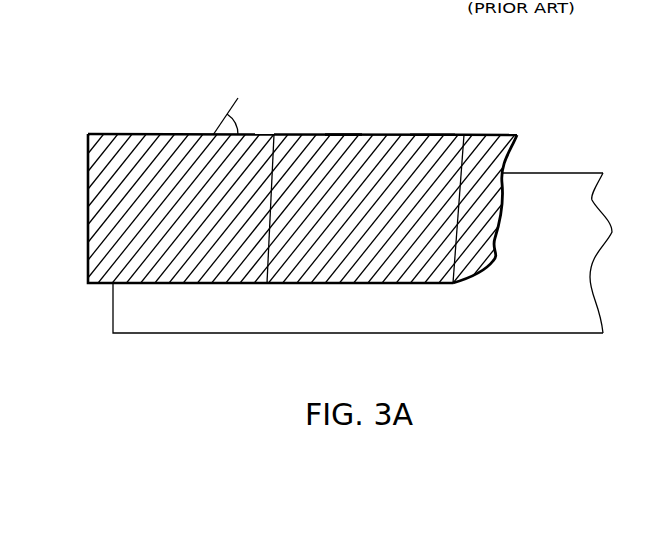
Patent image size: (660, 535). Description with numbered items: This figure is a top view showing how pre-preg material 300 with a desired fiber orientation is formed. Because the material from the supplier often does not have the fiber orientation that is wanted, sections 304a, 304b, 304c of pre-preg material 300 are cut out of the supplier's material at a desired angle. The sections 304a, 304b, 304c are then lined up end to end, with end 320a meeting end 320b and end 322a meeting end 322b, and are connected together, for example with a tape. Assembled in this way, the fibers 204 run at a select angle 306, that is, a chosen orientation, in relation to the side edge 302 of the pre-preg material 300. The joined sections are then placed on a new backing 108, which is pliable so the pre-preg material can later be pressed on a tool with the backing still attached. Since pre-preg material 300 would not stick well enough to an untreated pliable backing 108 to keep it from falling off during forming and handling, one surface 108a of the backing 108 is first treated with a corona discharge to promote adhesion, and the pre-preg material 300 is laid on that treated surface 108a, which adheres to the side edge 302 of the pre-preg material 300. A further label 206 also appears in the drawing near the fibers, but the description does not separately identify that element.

The pre-preg material 300 is at (236, 55).
The side edge 302 is at (497, 132).
The section 304a is at (173, 133).
The section 304b is at (387, 133).
The section 304c is at (478, 132).
The select angle 306 is at (263, 108).
The coating layer 206 is at (358, 133).
The fibers 204 is at (450, 133).
The end 320a is at (266, 263).
The end 320b is at (266, 268).
The end 322a is at (458, 251).
The end 322b is at (458, 251).
The backing 108 is at (537, 312).
The treated surface 108a is at (502, 317).